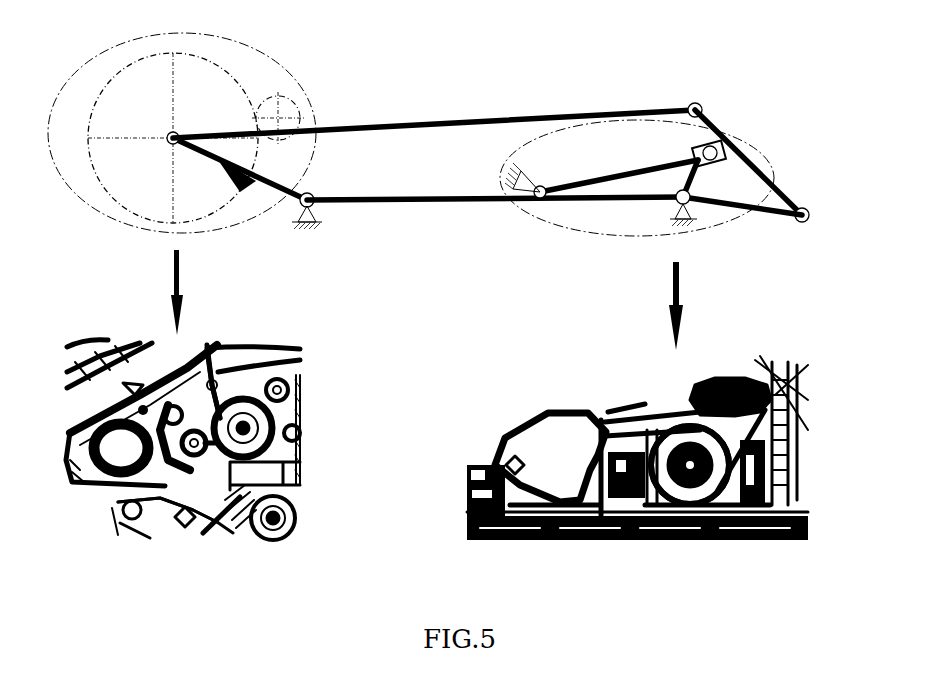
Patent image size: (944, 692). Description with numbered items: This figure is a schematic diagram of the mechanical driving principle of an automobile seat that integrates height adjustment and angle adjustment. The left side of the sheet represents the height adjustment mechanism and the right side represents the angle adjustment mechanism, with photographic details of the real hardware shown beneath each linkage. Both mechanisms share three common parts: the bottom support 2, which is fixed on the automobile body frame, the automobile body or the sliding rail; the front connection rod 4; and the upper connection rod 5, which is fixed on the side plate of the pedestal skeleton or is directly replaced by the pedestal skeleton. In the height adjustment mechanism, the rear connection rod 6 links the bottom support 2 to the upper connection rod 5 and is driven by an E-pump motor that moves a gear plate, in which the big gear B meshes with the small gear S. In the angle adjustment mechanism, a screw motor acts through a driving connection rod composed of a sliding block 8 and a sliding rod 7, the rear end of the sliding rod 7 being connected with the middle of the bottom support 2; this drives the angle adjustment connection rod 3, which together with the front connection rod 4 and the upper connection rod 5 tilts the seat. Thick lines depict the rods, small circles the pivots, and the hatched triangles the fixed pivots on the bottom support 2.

The bottom support 2 is at (462, 204).
The angle adjustment connection rod 3 is at (703, 187).
The front connection rod 4 is at (756, 153).
The upper connection rod 5 is at (546, 112).
The rear connection rod 6 is at (284, 183).
The sliding rod 7 is at (585, 177).
The sliding block 8 is at (690, 144).
The big gear B is at (220, 393).
The small gear S is at (294, 436).